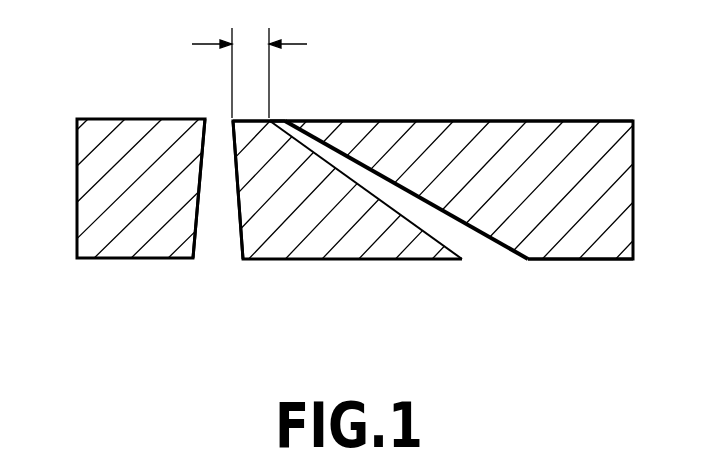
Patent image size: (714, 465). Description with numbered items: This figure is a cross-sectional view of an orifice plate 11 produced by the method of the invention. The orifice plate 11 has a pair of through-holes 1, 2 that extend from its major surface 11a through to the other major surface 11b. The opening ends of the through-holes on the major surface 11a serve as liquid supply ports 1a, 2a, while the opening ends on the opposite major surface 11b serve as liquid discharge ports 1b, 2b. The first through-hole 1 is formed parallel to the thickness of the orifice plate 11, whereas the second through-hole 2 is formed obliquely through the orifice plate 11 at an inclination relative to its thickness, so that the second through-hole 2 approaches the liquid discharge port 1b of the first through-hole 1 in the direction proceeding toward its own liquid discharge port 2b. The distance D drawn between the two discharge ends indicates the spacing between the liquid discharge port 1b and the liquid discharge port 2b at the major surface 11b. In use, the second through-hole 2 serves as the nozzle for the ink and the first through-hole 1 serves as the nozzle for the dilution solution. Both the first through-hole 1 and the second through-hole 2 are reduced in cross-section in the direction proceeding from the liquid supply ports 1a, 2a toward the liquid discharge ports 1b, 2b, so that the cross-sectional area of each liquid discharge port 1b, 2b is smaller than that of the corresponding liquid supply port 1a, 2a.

The first through-hole 1 is at (200, 199).
The liquid supply port 1a is at (243, 262).
The liquid discharge port 1b is at (204, 118).
The second through-hole 2 is at (398, 187).
The liquid supply port 2a is at (463, 262).
The liquid discharge port 2b is at (270, 121).
The orifice plate 11 is at (606, 192).
The major surface 11a is at (550, 262).
The major surface 11b is at (559, 121).
The gap distance D is at (249, 66).